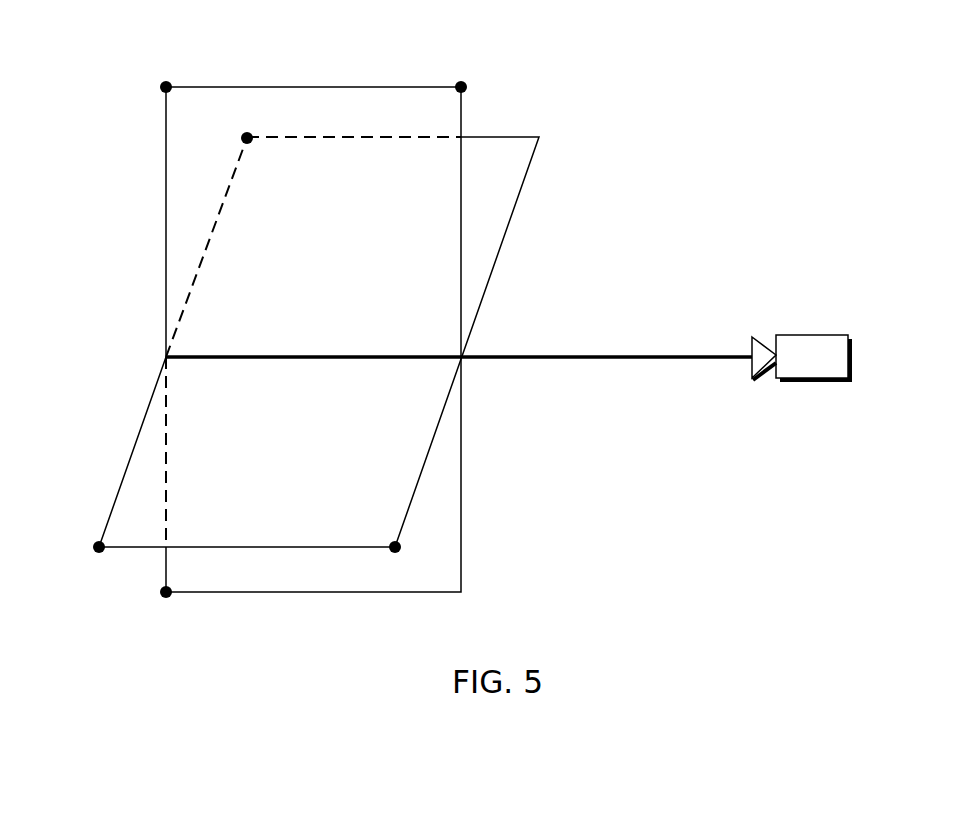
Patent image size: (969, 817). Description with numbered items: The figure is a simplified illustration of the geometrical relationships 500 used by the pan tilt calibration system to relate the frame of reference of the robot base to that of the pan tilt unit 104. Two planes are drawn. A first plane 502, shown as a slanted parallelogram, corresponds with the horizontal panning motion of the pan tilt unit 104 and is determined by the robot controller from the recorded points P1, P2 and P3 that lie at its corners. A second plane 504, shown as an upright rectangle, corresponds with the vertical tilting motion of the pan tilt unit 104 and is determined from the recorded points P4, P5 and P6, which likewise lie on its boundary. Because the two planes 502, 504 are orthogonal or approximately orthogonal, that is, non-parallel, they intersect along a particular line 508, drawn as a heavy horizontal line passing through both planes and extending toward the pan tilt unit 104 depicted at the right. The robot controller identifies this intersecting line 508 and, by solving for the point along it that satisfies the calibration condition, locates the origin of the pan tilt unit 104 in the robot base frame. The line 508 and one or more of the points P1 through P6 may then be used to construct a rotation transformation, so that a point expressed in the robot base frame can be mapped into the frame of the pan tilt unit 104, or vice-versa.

The calibration arrangement 500 is at (66, 116).
The first plane 502 is at (515, 137).
The second plane 504 is at (461, 547).
The intersecting line 508 is at (575, 357).
The pan tilt unit 104 is at (815, 335).
The recorded point P1 is at (98, 561).
The recorded point P2 is at (261, 151).
The recorded point P3 is at (383, 535).
The recorded point P4 is at (166, 607).
The recorded point P5 is at (166, 75).
The recorded point P6 is at (463, 75).